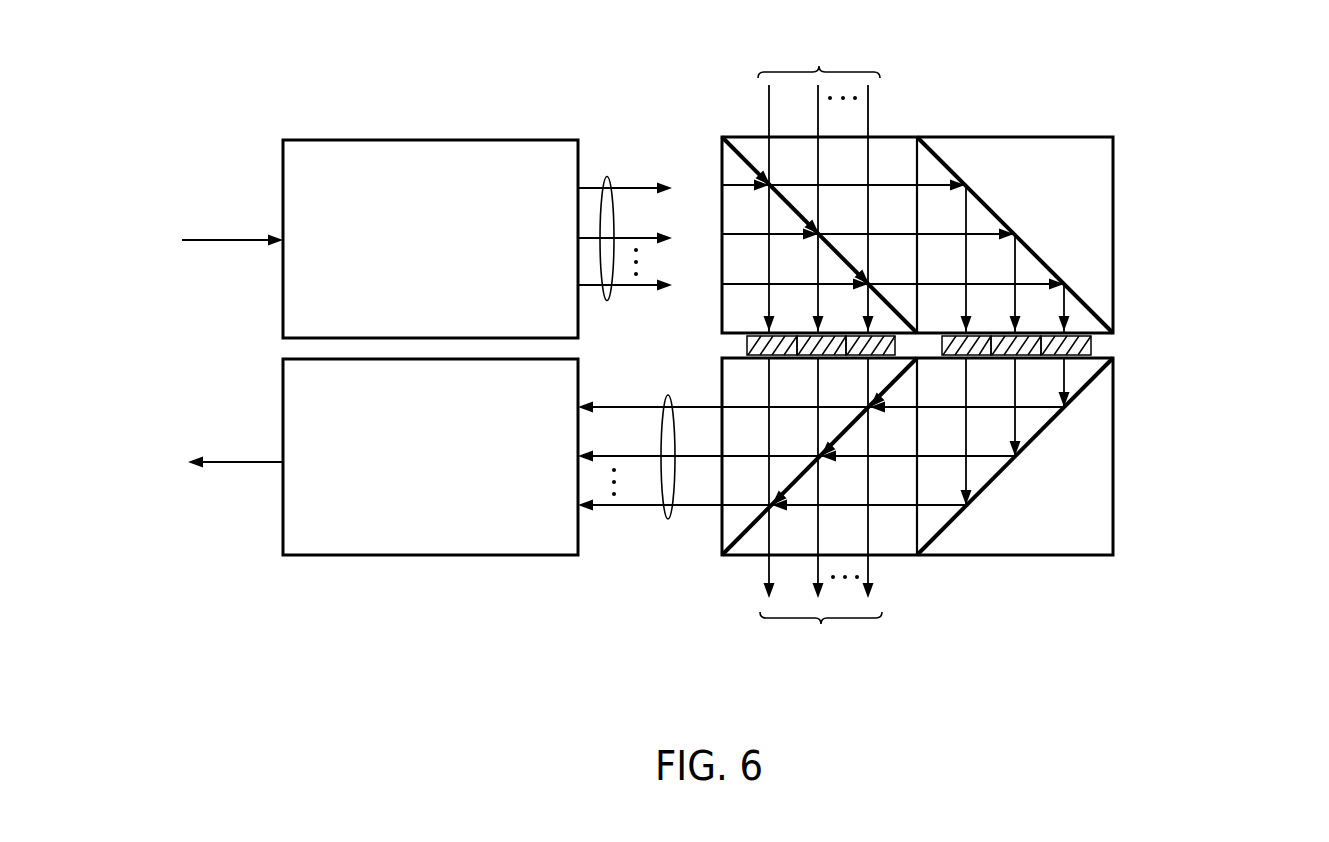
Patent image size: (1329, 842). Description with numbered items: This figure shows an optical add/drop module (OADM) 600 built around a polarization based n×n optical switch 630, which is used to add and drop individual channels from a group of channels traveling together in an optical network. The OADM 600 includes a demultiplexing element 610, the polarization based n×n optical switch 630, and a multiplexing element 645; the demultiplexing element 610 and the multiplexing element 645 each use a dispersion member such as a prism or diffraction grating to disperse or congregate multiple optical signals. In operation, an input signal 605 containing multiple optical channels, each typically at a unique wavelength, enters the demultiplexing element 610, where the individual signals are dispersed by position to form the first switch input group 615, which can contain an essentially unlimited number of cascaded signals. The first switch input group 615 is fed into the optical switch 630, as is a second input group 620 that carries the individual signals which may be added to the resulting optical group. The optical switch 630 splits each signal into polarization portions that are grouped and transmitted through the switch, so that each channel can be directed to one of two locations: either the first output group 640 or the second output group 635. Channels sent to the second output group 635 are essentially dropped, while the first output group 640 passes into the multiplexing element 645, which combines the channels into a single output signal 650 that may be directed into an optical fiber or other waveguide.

The optical add/drop module 600 is at (1202, 131).
The input signal 605 is at (209, 240).
The demultiplexing element 610 is at (450, 288).
The first switch input group 615 is at (607, 177).
The second input group 620 is at (819, 83).
The polarization based n×n optical switch 630 is at (1130, 303).
The second output group 635 is at (821, 613).
The first output group 640 is at (668, 520).
The multiplexing element 645 is at (450, 507).
The output signal 650 is at (209, 462).